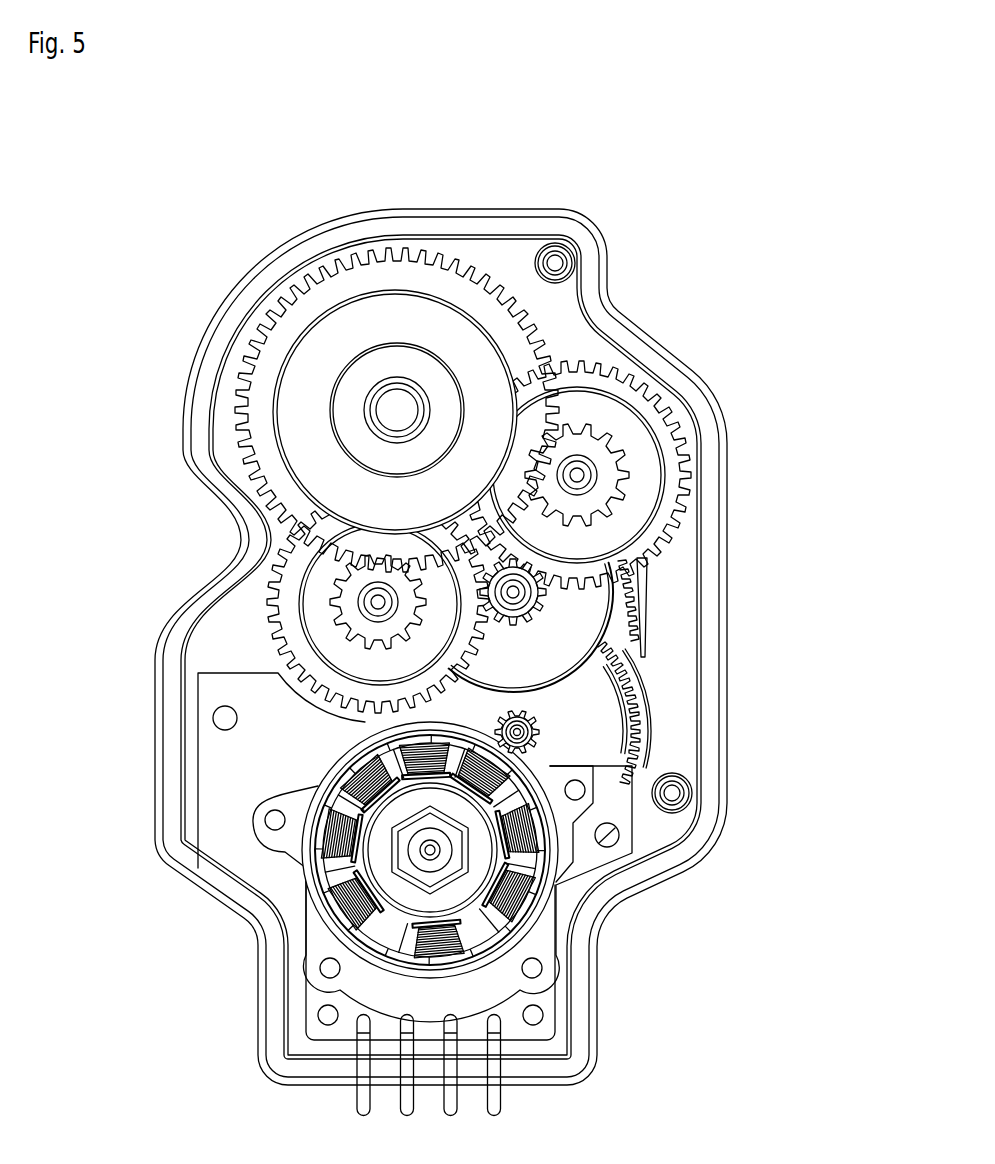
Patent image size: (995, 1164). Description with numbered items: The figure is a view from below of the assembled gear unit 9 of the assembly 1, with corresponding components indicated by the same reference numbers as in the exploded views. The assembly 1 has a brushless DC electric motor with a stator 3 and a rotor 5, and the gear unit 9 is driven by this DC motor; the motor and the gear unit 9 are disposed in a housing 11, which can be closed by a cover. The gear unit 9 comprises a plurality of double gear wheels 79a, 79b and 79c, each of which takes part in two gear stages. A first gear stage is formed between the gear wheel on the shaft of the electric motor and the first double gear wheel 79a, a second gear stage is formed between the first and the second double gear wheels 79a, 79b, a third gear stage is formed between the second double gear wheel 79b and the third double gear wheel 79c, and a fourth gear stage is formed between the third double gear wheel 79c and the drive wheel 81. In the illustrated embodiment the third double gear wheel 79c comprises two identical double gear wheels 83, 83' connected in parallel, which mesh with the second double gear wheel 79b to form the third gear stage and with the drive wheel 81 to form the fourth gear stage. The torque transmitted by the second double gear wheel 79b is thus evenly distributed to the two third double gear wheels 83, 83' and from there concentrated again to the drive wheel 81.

The assembly 1 is at (168, 197).
The stator 3 is at (525, 860).
The rotor 5 is at (383, 877).
The gear unit 9 is at (575, 327).
The housing 11 is at (712, 780).
The first double gear wheel 79a is at (653, 684).
The second double gear wheel 79b is at (647, 618).
The third double gear wheel 79c is at (668, 394).
The drive wheel 81 is at (465, 275).
The double gear wheel 83 is at (275, 573).
The double gear wheel 83' is at (663, 506).